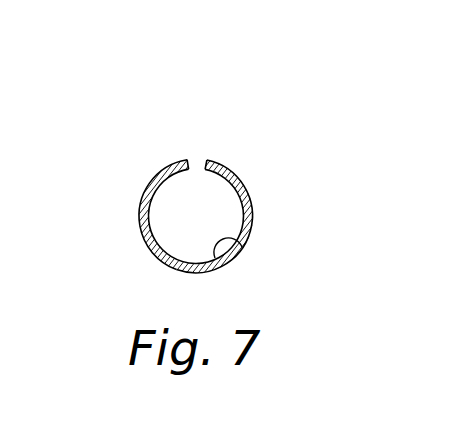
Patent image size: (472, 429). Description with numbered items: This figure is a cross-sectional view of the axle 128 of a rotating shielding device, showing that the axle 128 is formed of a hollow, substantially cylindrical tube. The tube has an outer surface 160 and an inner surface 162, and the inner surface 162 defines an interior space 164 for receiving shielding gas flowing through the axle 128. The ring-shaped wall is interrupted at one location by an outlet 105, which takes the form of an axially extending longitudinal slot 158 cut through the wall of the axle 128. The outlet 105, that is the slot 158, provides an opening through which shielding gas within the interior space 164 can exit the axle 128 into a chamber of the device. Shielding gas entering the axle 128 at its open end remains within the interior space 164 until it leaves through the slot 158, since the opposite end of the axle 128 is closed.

The outlet 105 is at (177, 147).
The axle 128 is at (253, 209).
The axially extending longitudinal slot 158 is at (197, 159).
The outer surface 160 is at (152, 260).
The inner surface 162 is at (241, 249).
The interior space 164 is at (207, 227).